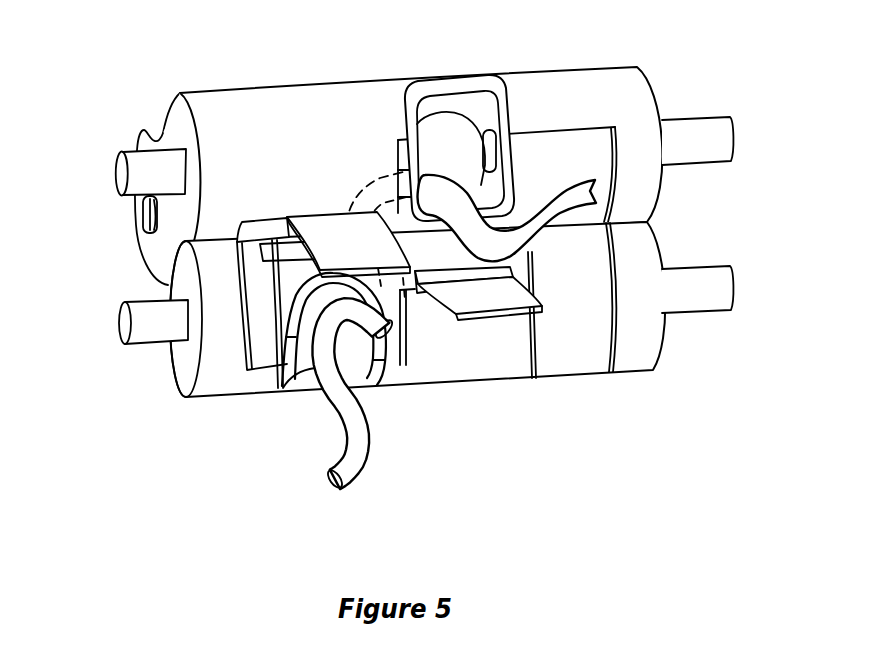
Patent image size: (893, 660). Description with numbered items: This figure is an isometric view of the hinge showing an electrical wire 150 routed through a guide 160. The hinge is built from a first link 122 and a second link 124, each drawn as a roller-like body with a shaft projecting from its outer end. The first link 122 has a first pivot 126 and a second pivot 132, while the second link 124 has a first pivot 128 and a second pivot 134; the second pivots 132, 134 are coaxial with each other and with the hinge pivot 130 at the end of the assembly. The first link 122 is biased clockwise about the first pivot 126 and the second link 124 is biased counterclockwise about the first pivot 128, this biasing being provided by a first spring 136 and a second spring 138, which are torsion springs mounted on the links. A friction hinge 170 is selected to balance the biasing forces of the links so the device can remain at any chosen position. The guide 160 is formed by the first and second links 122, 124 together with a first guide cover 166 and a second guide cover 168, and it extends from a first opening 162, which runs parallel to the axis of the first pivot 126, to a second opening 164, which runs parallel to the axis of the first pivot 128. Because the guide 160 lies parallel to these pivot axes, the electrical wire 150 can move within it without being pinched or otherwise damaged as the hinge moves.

The first link 122 is at (122, 70).
The second link 124 is at (711, 381).
The first pivot 126 is at (732, 143).
The first pivot 128 is at (732, 279).
The hinge pivot 130 is at (105, 189).
The second pivot 132 is at (148, 208).
The second pivot 134 is at (148, 226).
The first spring 136 is at (330, 233).
The second spring 138 is at (499, 311).
The electrical wire 150 is at (363, 457).
The guide 160 is at (350, 168).
The first opening 162 is at (441, 172).
The second opening 164 is at (347, 370).
The first guide cover 166 is at (535, 147).
The second guide cover 168 is at (265, 357).
The friction hinge 170 is at (578, 373).